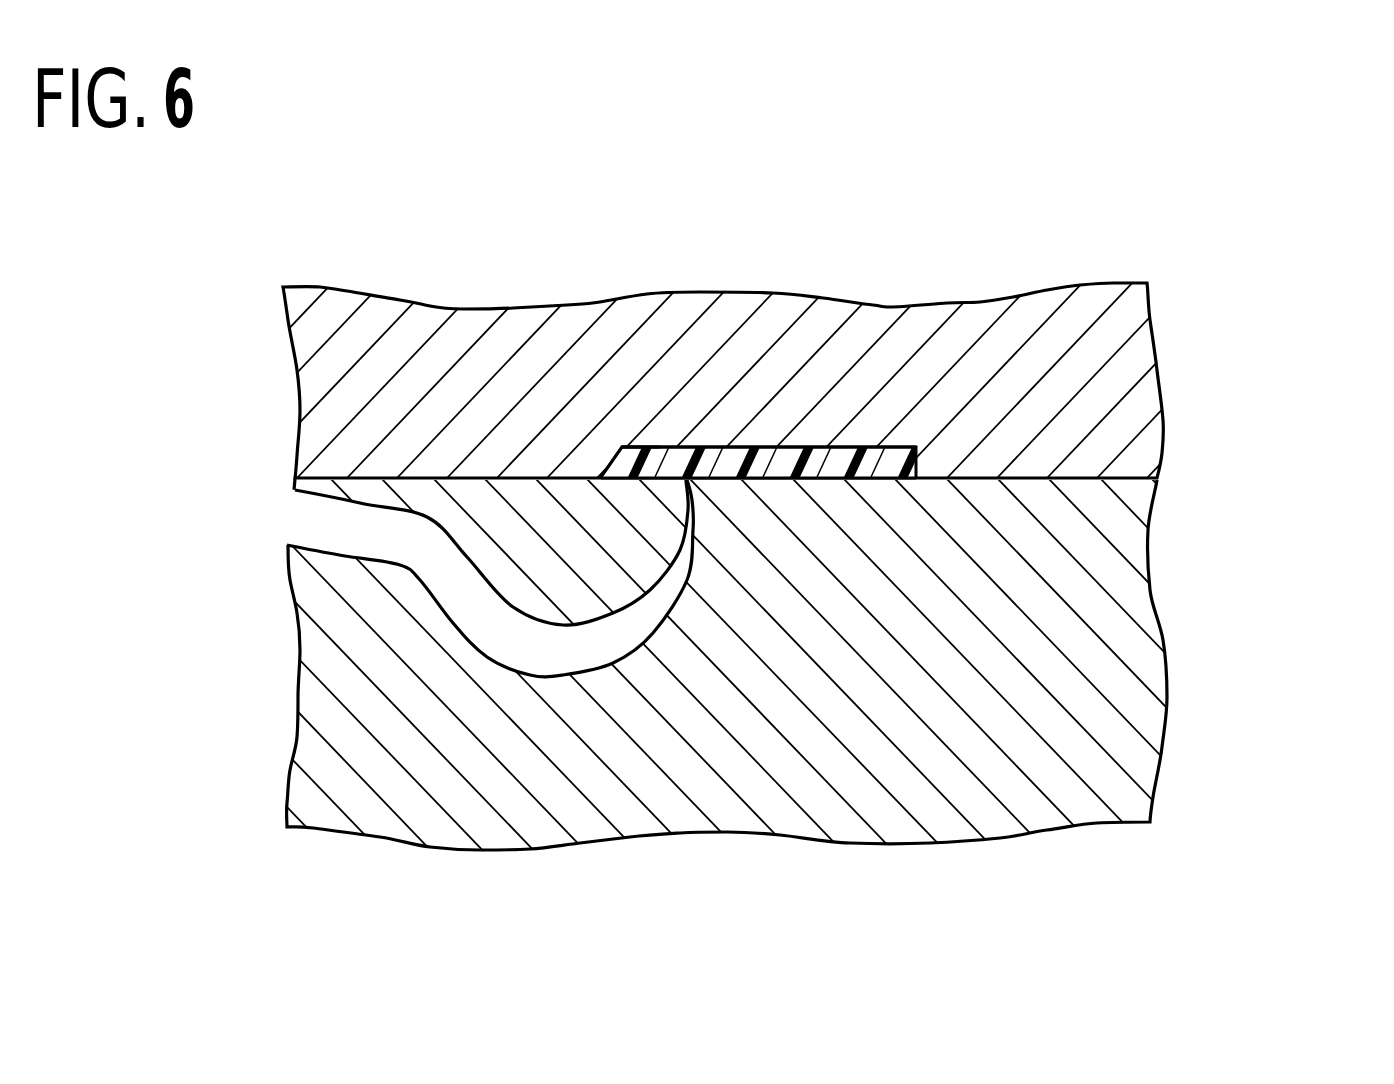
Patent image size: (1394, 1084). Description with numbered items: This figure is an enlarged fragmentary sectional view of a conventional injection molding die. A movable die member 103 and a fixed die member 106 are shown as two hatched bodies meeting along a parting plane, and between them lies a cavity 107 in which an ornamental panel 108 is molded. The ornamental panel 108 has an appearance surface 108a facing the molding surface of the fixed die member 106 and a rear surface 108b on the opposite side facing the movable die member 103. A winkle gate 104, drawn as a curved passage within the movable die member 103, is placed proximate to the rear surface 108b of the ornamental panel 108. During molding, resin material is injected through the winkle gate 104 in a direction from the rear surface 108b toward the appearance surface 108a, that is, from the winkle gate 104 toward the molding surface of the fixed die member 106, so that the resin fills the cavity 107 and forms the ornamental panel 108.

The movable die member 103 is at (1137, 695).
The winkle gate 104 is at (548, 653).
The fixed die member 106 is at (1048, 313).
The cavity 107 is at (653, 446).
The ornamental panel 108 is at (862, 446).
The appearance surface 108a is at (755, 446).
The rear surface 108b is at (815, 478).